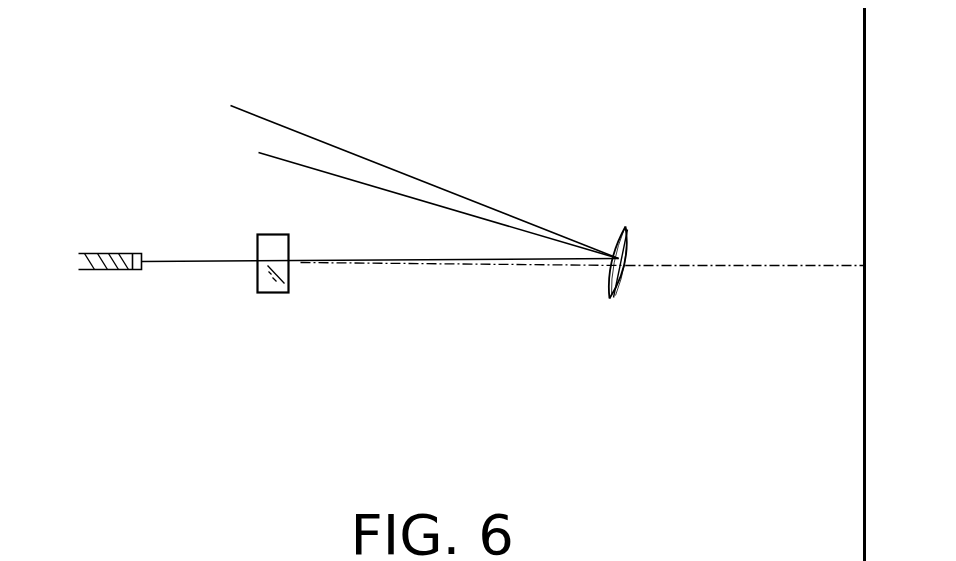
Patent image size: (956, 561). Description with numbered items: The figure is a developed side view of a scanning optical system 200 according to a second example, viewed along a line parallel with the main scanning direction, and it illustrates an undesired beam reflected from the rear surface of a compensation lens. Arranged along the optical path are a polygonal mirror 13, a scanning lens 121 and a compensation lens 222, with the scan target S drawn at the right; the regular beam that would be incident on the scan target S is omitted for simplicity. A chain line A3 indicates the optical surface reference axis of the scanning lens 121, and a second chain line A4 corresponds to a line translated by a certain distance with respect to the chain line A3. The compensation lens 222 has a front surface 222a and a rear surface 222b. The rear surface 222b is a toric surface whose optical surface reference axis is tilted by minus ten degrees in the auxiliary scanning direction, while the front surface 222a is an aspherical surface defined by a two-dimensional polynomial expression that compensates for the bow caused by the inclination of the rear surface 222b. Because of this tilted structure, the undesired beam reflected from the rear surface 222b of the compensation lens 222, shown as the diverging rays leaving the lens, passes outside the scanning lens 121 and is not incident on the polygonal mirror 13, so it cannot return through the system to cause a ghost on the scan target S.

The scanning optical system 200 is at (165, 71).
The polygonal mirror 13 is at (110, 270).
The scanning lens 121 is at (273, 294).
The compensation lens 222 is at (617, 298).
The front surface of compensation lens 222a is at (617, 238).
The rear surface of compensation lens 222b is at (631, 242).
The chain line indicating optical surface reference axis of scanning lens A3 is at (463, 272).
The chain line translated from chain line A3 A4 is at (752, 268).
The scan target S is at (864, 25).